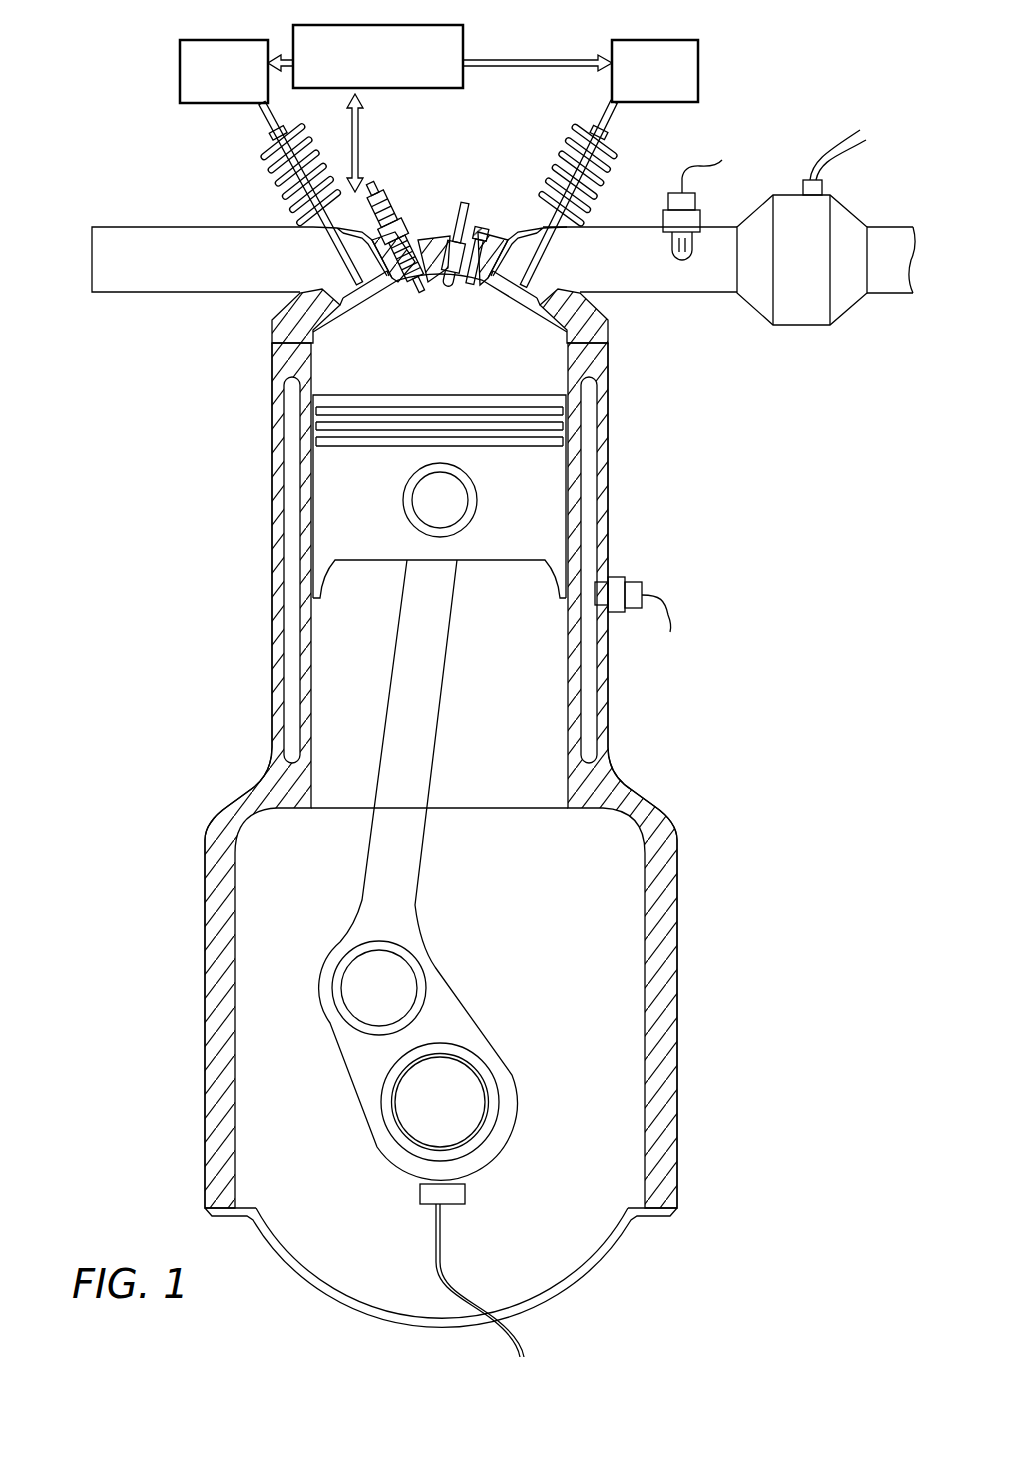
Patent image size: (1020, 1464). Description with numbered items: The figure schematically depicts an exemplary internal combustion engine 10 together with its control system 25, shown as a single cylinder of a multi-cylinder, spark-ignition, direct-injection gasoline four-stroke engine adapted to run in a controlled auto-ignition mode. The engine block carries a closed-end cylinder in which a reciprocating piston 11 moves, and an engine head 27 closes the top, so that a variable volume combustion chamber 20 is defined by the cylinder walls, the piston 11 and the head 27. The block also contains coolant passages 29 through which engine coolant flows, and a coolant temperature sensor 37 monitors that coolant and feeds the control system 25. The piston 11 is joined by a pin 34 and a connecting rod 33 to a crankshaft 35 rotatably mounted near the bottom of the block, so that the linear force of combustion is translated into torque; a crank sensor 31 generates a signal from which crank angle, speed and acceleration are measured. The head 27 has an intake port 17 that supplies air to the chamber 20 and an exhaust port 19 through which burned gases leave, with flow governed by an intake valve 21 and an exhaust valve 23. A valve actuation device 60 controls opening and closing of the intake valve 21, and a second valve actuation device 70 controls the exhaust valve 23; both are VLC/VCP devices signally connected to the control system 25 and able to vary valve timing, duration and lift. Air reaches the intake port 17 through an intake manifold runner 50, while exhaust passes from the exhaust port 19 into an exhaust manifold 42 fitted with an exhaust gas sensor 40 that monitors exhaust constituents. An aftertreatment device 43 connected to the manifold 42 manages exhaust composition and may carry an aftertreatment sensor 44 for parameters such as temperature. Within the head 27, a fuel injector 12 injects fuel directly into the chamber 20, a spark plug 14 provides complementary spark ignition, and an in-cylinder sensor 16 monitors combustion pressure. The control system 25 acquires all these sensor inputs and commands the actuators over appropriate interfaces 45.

The internal combustion engine 10 is at (128, 433).
The piston 11 is at (540, 505).
The fuel injector 12 is at (460, 220).
The spark plug 14 is at (388, 205).
The in-cylinder sensor 16 is at (484, 222).
The intake port 17 is at (328, 285).
The exhaust port 19 is at (555, 280).
The combustion chamber 20 is at (330, 372).
The intake valve 21 is at (330, 250).
The exhaust valve 23 is at (548, 260).
The control system 25 is at (455, 32).
The engine head 27 is at (600, 328).
The coolant passages 29 is at (597, 420).
The crank sensor 31 is at (418, 1195).
The connecting rod 33 is at (413, 668).
The pin 34 is at (432, 498).
The crankshaft 35 is at (381, 1103).
The coolant temperature sensor 37 is at (633, 592).
The exhaust gas sensor 40 is at (697, 218).
The exhaust manifold 42 is at (703, 285).
The aftertreatment device 43 is at (795, 222).
The aftertreatment sensor 44 is at (807, 180).
The interfaces 45 is at (360, 128).
The intake manifold runner 50 is at (168, 283).
The valve actuation device 60 is at (183, 47).
The second valve actuation device 70 is at (693, 52).